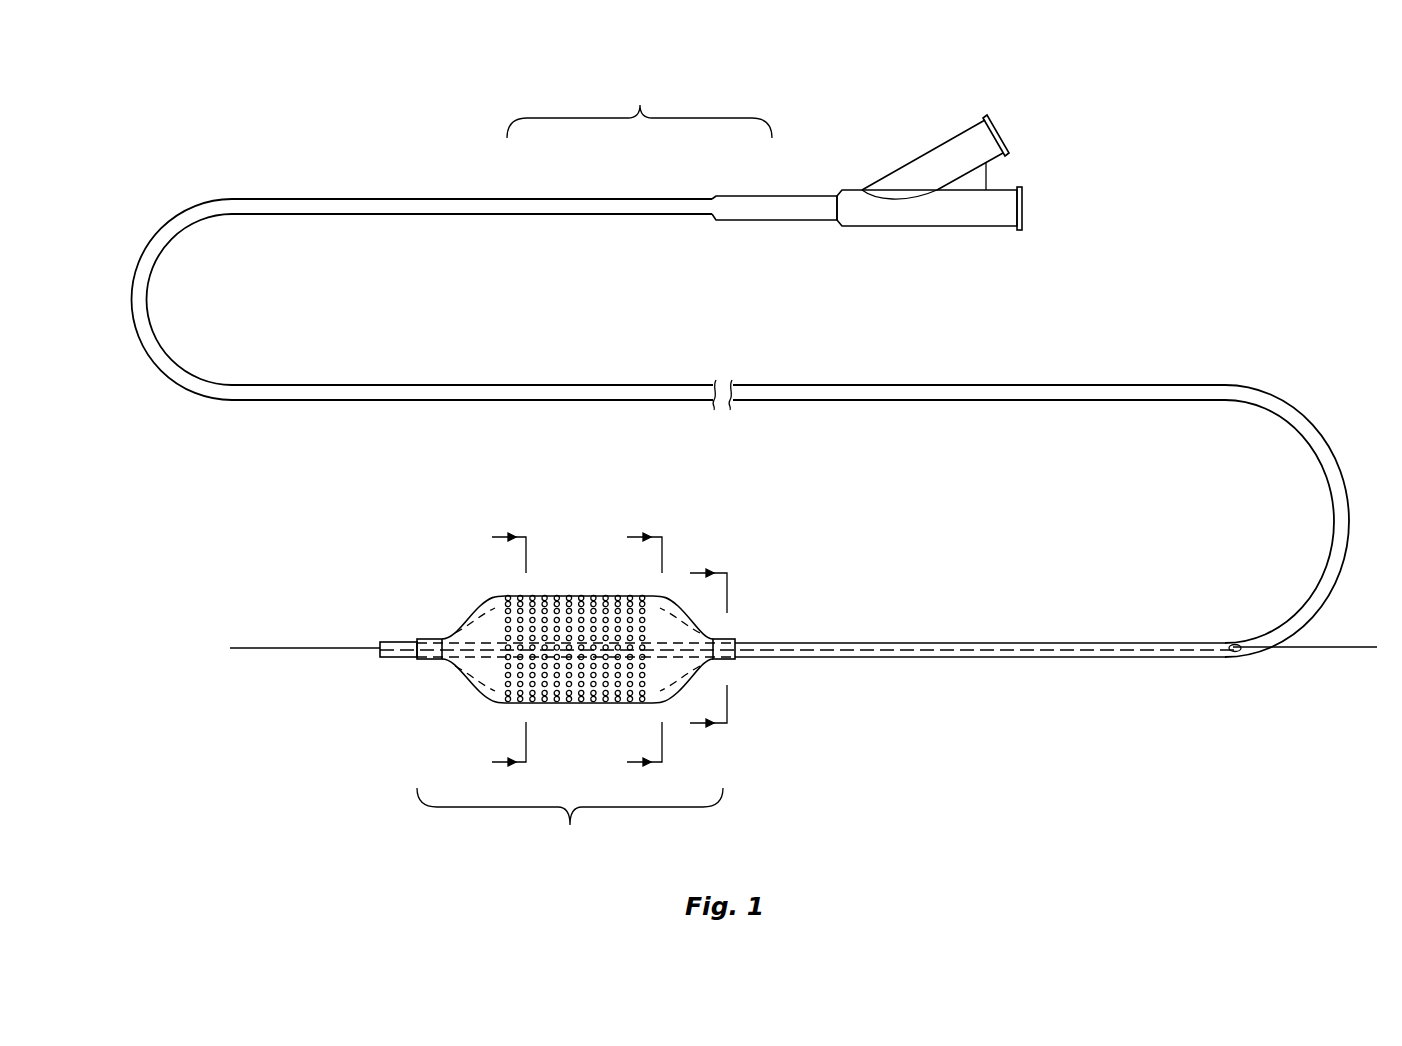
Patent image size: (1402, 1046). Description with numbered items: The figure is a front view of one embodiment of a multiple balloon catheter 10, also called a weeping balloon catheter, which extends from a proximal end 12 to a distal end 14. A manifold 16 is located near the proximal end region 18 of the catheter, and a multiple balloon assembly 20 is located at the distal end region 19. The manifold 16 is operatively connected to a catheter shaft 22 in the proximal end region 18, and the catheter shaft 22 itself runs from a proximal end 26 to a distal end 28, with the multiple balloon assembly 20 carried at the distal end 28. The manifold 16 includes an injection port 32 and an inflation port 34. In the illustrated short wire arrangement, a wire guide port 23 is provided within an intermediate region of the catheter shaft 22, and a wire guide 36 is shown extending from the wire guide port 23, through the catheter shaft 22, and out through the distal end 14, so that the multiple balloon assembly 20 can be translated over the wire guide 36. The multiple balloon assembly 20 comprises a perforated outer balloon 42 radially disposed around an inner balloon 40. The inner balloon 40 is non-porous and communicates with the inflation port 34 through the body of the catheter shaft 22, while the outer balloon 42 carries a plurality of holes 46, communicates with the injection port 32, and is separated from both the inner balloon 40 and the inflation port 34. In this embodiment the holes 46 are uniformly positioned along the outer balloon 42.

The multiple balloon catheter 10 is at (328, 188).
The proximal end 12 is at (1022, 208).
The distal end 14 is at (393, 639).
The manifold 16 is at (918, 191).
The proximal end region 18 is at (639, 105).
The distal end region 19 is at (570, 823).
The multiple balloon assembly 20 is at (805, 654).
The catheter shaft 22 is at (663, 383).
The wire guide port 23 is at (1235, 652).
The proximal end 26 is at (673, 197).
The distal end 28 is at (778, 656).
The injection port 32 is at (955, 152).
The inflation port 34 is at (952, 215).
The wire guide 36 is at (815, 644).
The inner balloon 40 is at (466, 624).
The perforated outer balloon 42 is at (606, 595).
The plurality of holes 46 is at (508, 668).